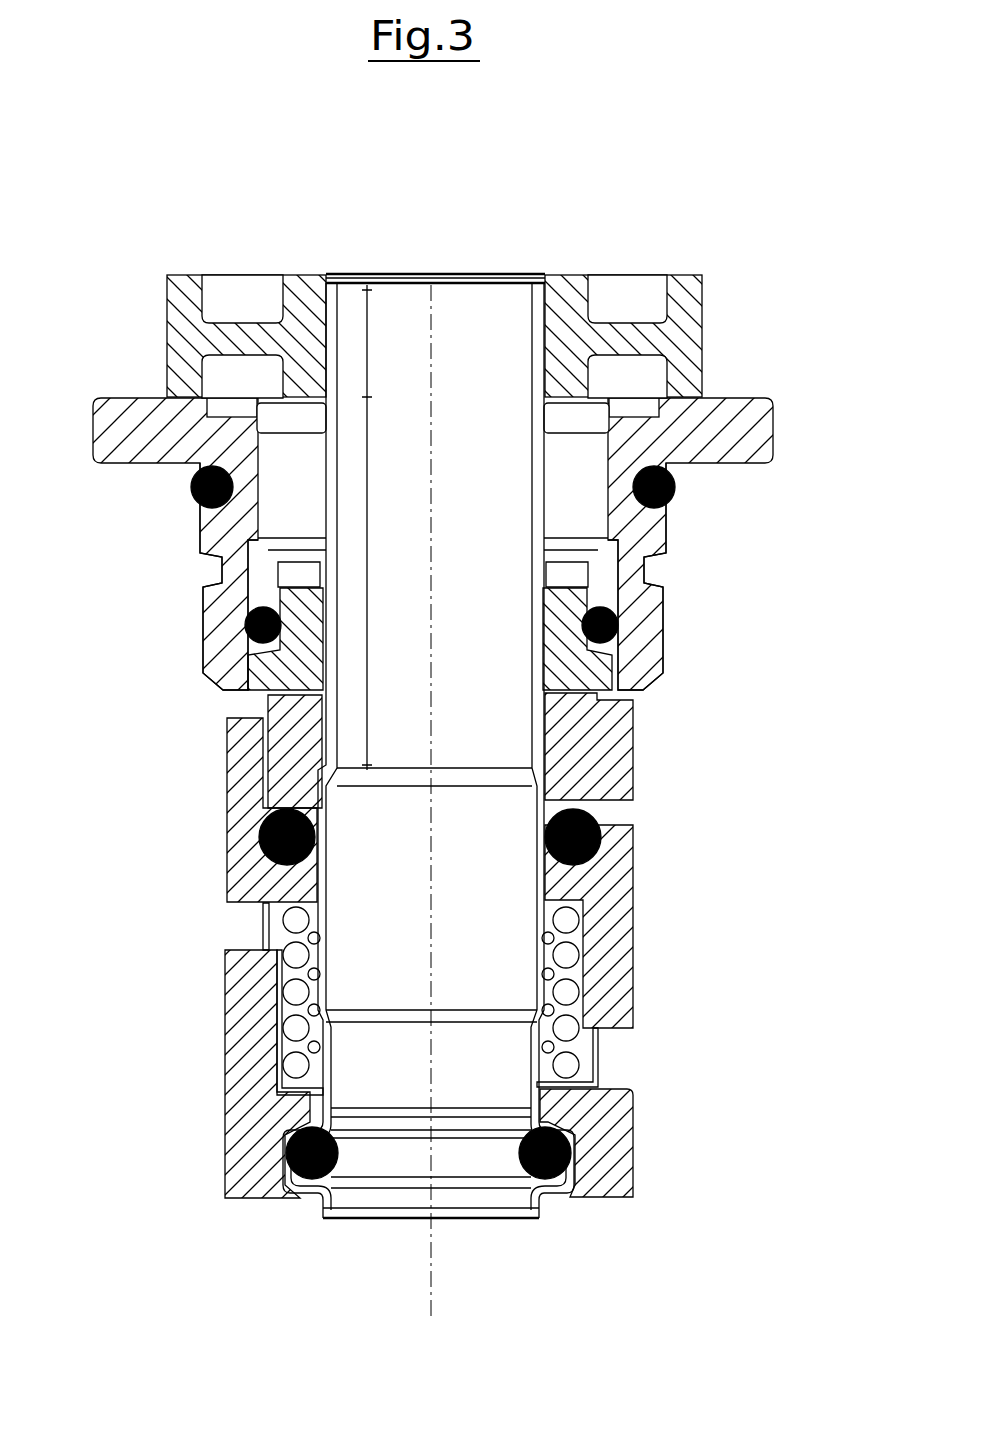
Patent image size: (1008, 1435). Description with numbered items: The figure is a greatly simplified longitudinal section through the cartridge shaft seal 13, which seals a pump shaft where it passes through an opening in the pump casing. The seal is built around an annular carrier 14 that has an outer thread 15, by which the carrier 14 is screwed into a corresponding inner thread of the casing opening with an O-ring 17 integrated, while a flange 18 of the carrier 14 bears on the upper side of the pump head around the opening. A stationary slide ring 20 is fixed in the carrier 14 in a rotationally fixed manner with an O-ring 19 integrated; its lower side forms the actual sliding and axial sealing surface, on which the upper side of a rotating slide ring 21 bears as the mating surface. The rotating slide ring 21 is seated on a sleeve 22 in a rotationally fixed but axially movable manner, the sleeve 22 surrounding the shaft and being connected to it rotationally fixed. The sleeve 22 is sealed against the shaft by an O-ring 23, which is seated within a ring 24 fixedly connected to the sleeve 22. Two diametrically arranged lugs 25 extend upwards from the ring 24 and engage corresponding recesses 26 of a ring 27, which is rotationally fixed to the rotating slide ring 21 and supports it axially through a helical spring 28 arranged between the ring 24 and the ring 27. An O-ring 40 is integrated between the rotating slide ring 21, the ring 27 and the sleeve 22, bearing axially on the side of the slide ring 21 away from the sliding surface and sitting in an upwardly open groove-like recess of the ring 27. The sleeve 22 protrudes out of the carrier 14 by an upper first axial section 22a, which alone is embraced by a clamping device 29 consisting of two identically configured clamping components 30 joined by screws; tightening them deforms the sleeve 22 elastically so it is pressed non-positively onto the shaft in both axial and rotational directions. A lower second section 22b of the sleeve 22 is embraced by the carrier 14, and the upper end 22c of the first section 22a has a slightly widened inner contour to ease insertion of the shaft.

The cartridge shaft seal 13 is at (183, 226).
The carrier 14 is at (663, 542).
The outer thread 15 is at (653, 607).
The O-ring 17 is at (192, 492).
The flange 18 is at (748, 412).
The O-ring 19 is at (245, 620).
The stationary slide ring 20 is at (657, 680).
The rotating slide ring 21 is at (633, 732).
The sleeve 22 is at (528, 485).
The upper first axial section 22a is at (367, 345).
The lower second section 22b is at (367, 583).
The upper end 22c is at (338, 268).
The O-ring 23 is at (312, 1200).
The ring 24 is at (632, 1130).
The lugs 25 is at (235, 997).
The recesses 26 is at (268, 917).
The ring 27 is at (633, 902).
The helical spring 28 is at (587, 987).
The clamping device 29 is at (705, 338).
The clamping components 30 is at (180, 312).
The O-ring 40 is at (633, 857).